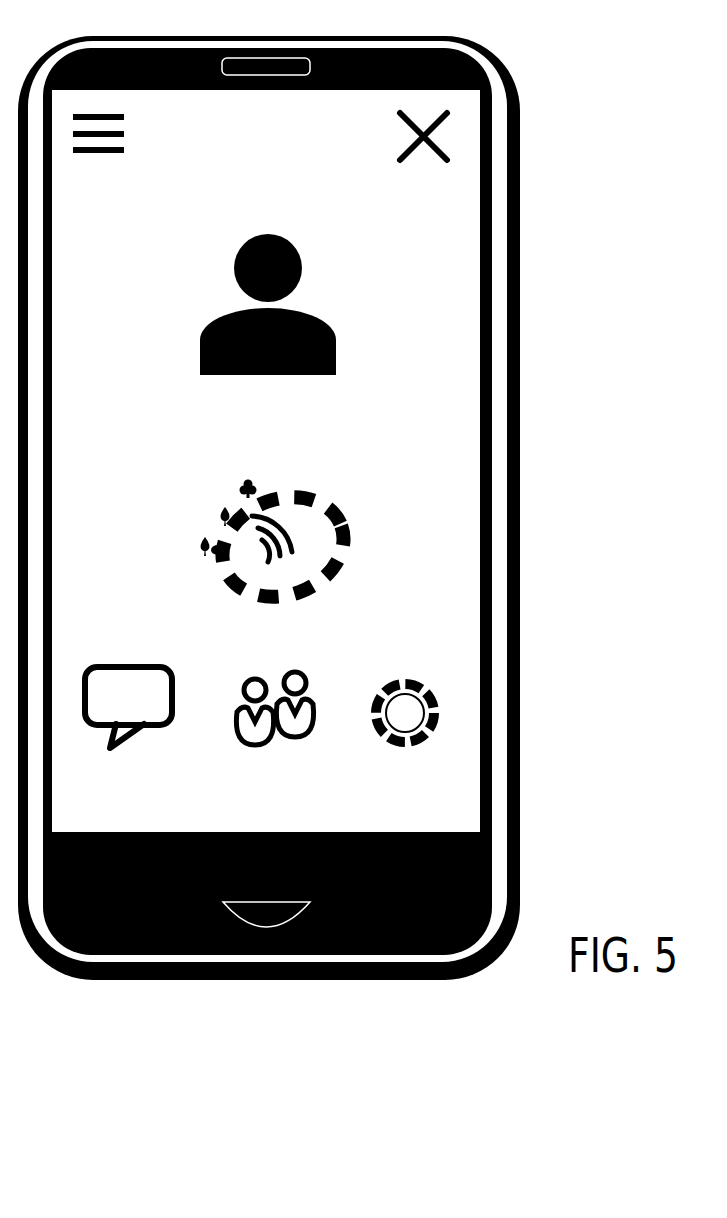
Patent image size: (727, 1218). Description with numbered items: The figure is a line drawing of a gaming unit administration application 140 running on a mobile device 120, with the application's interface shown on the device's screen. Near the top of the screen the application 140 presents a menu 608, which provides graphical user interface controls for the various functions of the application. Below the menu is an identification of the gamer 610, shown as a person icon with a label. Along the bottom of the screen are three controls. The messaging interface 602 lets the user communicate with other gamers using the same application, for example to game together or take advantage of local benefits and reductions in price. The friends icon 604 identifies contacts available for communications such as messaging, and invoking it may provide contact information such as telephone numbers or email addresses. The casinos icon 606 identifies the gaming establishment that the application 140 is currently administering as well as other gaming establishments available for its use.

The mobile device 120 is at (291, 1072).
The gaming unit administration application 140 is at (553, 817).
The messaging interface 602 is at (139, 813).
The friends icon 604 is at (291, 813).
The casinos icon 606 is at (423, 813).
The menu 608 is at (116, 217).
The identification of the gamer 610 is at (284, 437).